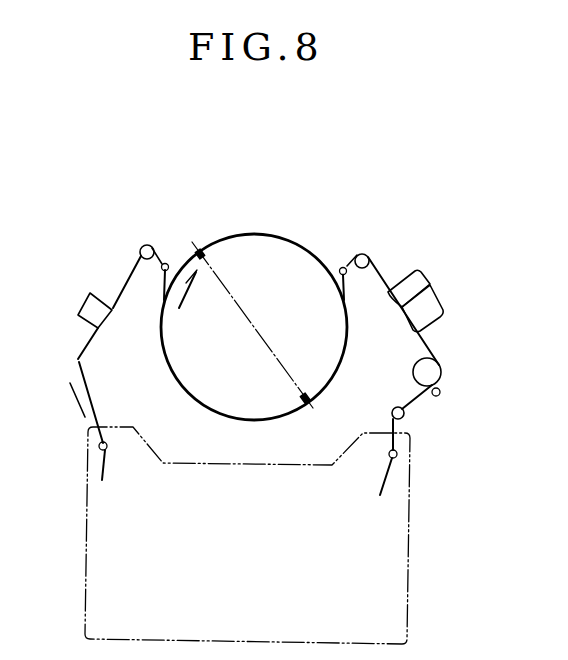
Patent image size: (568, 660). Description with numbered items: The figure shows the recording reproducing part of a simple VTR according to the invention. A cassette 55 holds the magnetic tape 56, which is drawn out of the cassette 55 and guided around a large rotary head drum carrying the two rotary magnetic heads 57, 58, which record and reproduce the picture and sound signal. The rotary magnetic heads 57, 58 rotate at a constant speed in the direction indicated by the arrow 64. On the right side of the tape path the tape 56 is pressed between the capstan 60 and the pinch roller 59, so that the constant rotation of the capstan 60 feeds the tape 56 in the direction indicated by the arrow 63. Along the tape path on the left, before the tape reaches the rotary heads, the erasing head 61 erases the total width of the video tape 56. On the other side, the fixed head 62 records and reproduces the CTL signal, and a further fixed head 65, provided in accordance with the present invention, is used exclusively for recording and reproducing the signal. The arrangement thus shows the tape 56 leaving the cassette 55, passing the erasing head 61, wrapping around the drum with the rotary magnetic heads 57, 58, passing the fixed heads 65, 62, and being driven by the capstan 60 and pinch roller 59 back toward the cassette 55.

The cassette 55 is at (397, 527).
The magnetic tape 56 is at (417, 398).
The rotary magnetic head 57 is at (203, 248).
The rotary magnetic head 58 is at (313, 393).
The pinch roller 59 is at (430, 367).
The capstan 60 is at (440, 393).
The erasing head 61 is at (88, 310).
The fixed head 62 is at (430, 307).
The arrow 63 is at (77, 400).
The arrow 64 is at (186, 283).
The fixed head 65 is at (408, 282).